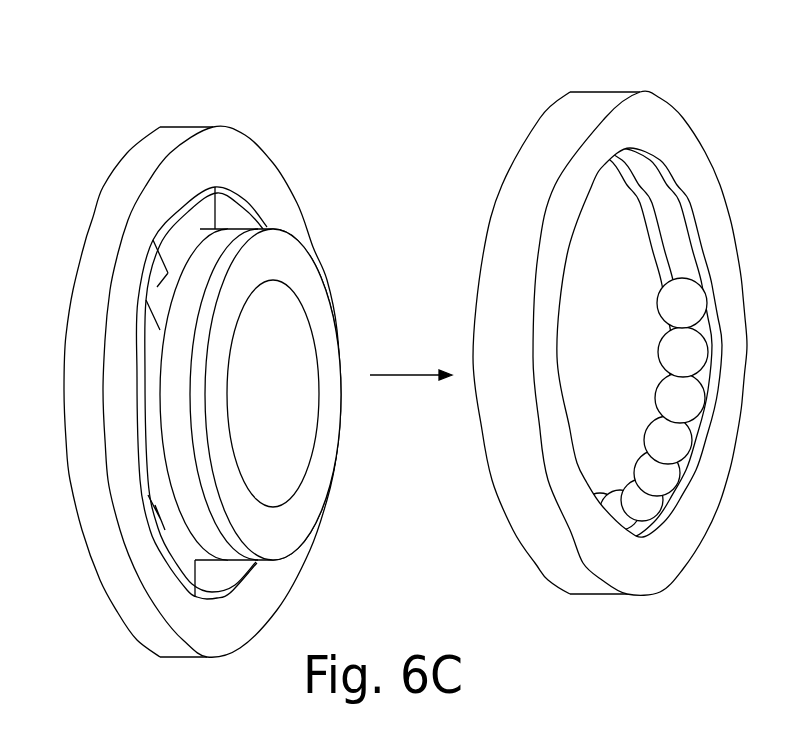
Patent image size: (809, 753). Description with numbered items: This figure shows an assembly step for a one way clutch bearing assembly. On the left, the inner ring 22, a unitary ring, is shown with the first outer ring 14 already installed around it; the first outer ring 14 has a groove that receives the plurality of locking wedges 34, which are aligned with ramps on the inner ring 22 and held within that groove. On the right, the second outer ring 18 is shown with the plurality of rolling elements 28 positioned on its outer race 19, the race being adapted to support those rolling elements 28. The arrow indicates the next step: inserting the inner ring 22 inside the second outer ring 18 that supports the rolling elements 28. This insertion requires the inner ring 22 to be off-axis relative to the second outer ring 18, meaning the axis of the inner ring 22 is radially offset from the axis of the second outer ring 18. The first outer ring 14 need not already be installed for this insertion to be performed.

The first outer ring 14 is at (222, 148).
The locking wedges 34 is at (233, 210).
The inner ring 22 is at (307, 263).
The second outer ring 18 is at (643, 110).
The outer race 19 is at (668, 205).
The rolling elements 28 is at (680, 443).